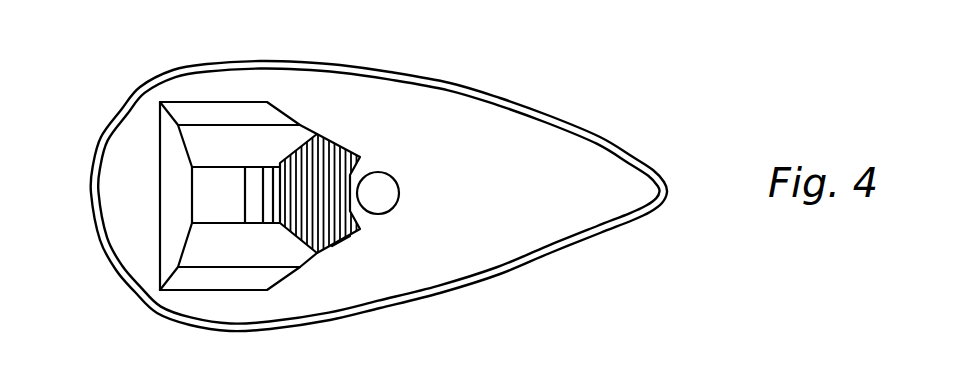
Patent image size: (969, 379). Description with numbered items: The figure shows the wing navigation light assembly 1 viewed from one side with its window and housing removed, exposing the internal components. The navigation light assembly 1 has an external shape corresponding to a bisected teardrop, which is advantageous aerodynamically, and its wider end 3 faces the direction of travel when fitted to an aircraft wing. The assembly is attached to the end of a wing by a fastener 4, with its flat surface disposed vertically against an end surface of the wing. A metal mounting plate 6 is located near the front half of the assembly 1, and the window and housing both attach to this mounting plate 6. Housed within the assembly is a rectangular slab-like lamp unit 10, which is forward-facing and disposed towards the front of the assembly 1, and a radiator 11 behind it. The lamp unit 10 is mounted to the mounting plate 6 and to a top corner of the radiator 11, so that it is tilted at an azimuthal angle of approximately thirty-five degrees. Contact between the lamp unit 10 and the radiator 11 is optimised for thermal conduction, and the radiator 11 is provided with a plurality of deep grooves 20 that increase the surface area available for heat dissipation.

The navigation light assembly 1 is at (514, 75).
The wider end 3 is at (118, 277).
The fastener 4 is at (387, 205).
The metal mounting plate 6 is at (138, 217).
The lamp unit 10 is at (188, 213).
The radiator 11 is at (338, 145).
The deep grooves 20 is at (332, 246).